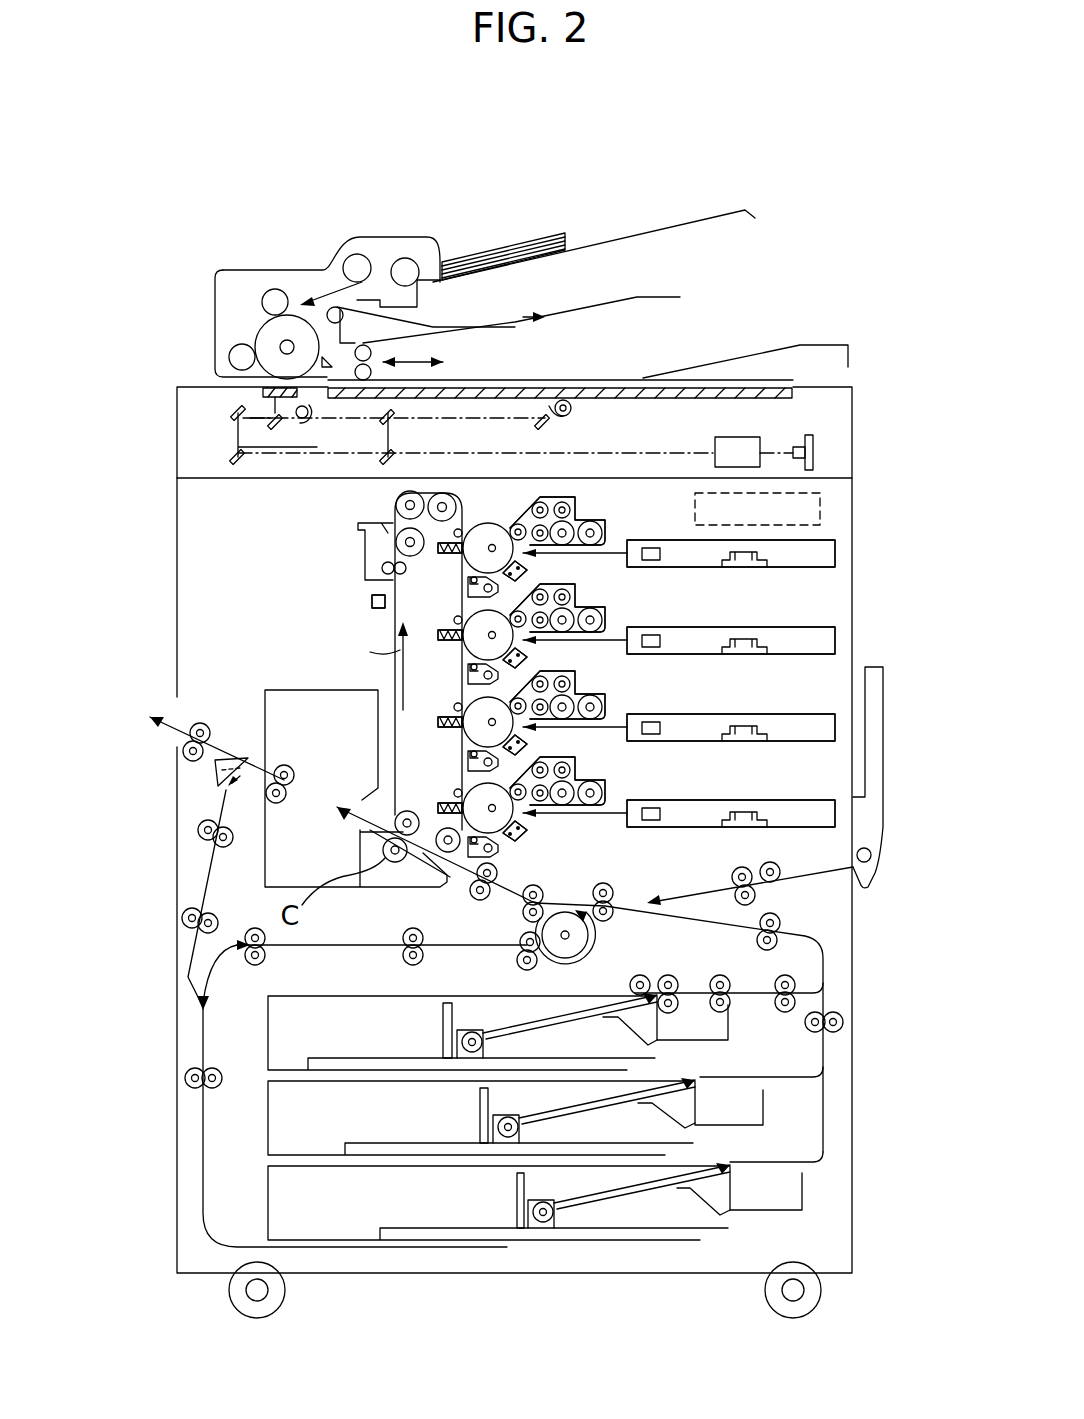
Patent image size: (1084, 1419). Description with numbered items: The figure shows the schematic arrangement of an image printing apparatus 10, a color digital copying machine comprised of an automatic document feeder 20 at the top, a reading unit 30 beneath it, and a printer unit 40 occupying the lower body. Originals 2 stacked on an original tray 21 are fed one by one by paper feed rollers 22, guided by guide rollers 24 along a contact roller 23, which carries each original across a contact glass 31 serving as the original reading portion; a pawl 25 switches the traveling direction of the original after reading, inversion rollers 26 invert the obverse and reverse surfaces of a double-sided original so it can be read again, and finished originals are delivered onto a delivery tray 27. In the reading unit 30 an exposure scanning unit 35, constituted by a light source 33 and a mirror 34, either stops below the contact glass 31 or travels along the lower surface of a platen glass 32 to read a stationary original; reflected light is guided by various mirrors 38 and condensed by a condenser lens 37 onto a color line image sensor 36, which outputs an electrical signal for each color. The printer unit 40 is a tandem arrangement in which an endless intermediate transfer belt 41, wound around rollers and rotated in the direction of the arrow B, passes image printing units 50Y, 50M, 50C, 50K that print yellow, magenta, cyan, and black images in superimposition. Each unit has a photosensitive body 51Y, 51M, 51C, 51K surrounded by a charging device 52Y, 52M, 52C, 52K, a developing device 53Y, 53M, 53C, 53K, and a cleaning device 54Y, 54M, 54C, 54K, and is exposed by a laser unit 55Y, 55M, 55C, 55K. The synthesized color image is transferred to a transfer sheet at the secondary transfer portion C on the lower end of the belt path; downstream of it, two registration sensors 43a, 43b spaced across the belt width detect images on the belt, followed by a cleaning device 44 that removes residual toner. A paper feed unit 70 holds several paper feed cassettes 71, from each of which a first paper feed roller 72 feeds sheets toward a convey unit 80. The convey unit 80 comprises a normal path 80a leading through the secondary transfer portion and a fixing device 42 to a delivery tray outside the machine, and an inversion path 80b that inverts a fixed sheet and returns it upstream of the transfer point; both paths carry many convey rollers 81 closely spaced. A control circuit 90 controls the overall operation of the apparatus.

The originals 2 is at (552, 233).
The image printing apparatus 10 is at (788, 256).
The automatic document feeder 20 is at (500, 177).
The original tray 21 is at (700, 217).
The paper feed rollers 22 is at (363, 256).
The contact roller 23 is at (213, 310).
The guide rollers 24 is at (272, 288).
The pawl 25 is at (325, 312).
The inversion rollers 26 is at (373, 347).
The delivery tray 27 is at (663, 291).
The reading unit 30 is at (855, 427).
The contact glass 31 is at (258, 394).
The platen glass 32 is at (600, 386).
The light source 33 is at (560, 400).
The mirror 34 is at (535, 428).
The exposure scanning unit 35 is at (577, 425).
The color line image sensor 36 is at (808, 435).
The condenser lens 37 is at (738, 437).
The mirrors 38 is at (380, 416).
The printer unit 40 is at (855, 584).
The intermediate transfer belt 41 is at (395, 621).
The fixing device 42 is at (290, 690).
The registration sensor 43a is at (370, 601).
The registration sensor 43b is at (378, 601).
The cleaning device 44 is at (358, 545).
The image printing unit 50Y is at (616, 549).
The image printing unit 50M is at (614, 637).
The image printing unit 50C is at (616, 732).
The image printing unit 50K is at (617, 812).
The photosensitive body 51Y is at (482, 523).
The photosensitive body 51M is at (465, 622).
The photosensitive body 51C is at (465, 709).
The photosensitive body 51K is at (465, 794).
The charging device 52Y is at (535, 576).
The charging device 52M is at (535, 662).
The charging device 52C is at (535, 748).
The charging device 52K is at (535, 836).
The developing device 53Y is at (592, 503).
The developing device 53M is at (592, 590).
The developing device 53C is at (557, 695).
The developing device 53K is at (592, 773).
The cleaning device 54Y is at (460, 562).
The cleaning device 54M is at (460, 642).
The cleaning device 54C is at (460, 729).
The cleaning device 54K is at (492, 852).
The laser unit 55Y is at (772, 567).
The laser unit 55M is at (772, 654).
The laser unit 55C is at (772, 741).
The laser unit 55K is at (710, 827).
The paper feed unit 70 is at (469, 1081).
The paper feed cassettes 71 is at (268, 1030).
The first paper feed roller 72 is at (638, 975).
The convey unit 80 is at (826, 948).
The normal path 80a is at (215, 740).
The inversion path 80b is at (208, 880).
The convey rollers 81 is at (205, 830).
The control circuit 90 is at (820, 500).